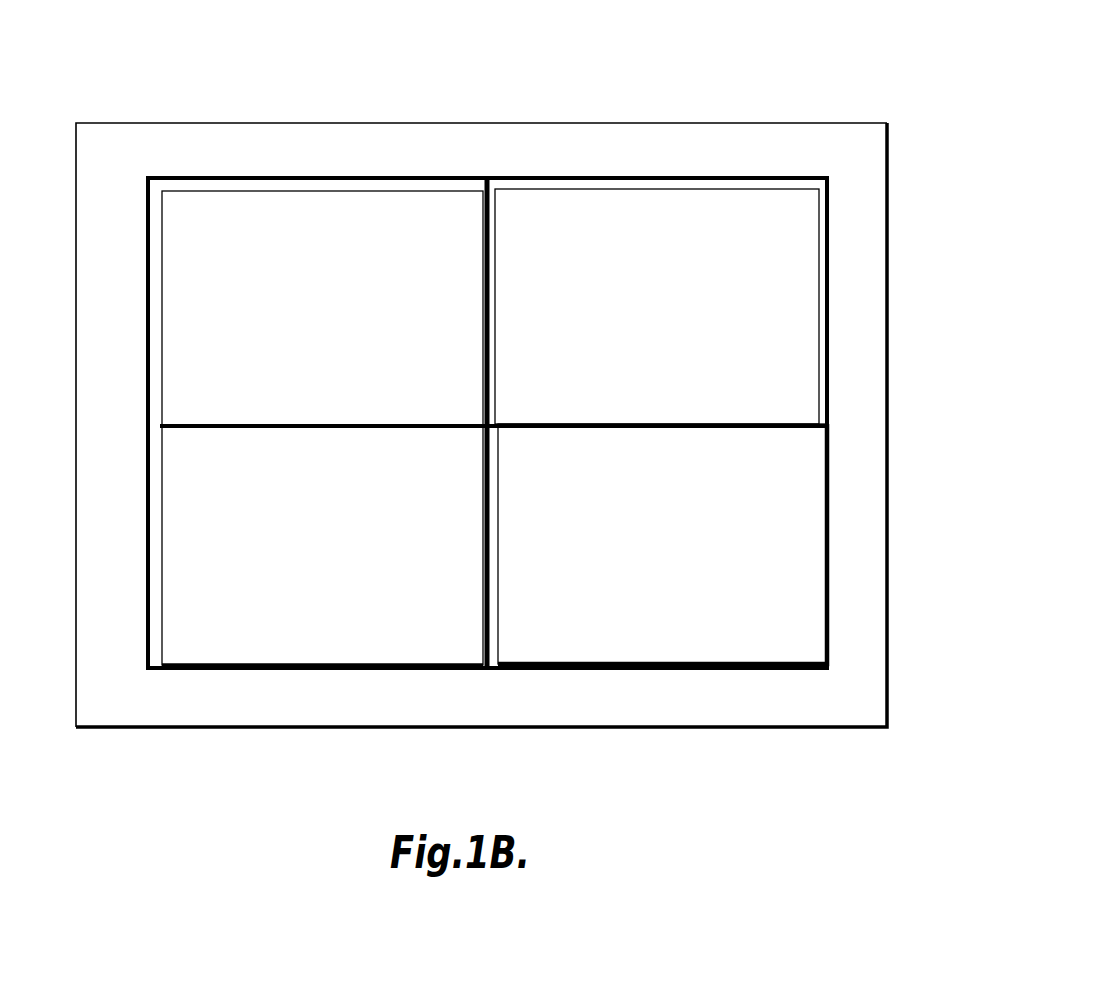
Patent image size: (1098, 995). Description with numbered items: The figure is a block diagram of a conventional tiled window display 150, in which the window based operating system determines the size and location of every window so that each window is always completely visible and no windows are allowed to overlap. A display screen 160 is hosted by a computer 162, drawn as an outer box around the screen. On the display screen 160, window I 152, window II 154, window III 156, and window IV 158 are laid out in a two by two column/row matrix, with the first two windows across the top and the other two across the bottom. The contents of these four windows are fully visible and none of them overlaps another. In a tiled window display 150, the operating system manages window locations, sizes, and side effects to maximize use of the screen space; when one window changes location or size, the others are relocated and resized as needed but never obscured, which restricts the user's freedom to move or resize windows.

The tiled window display 150 is at (581, 381).
The computer 162 is at (447, 123).
The display screen 160 is at (488, 178).
The window I 152 is at (161, 281).
The window II 154 is at (828, 214).
The window III 156 is at (161, 498).
The window IV 158 is at (829, 494).